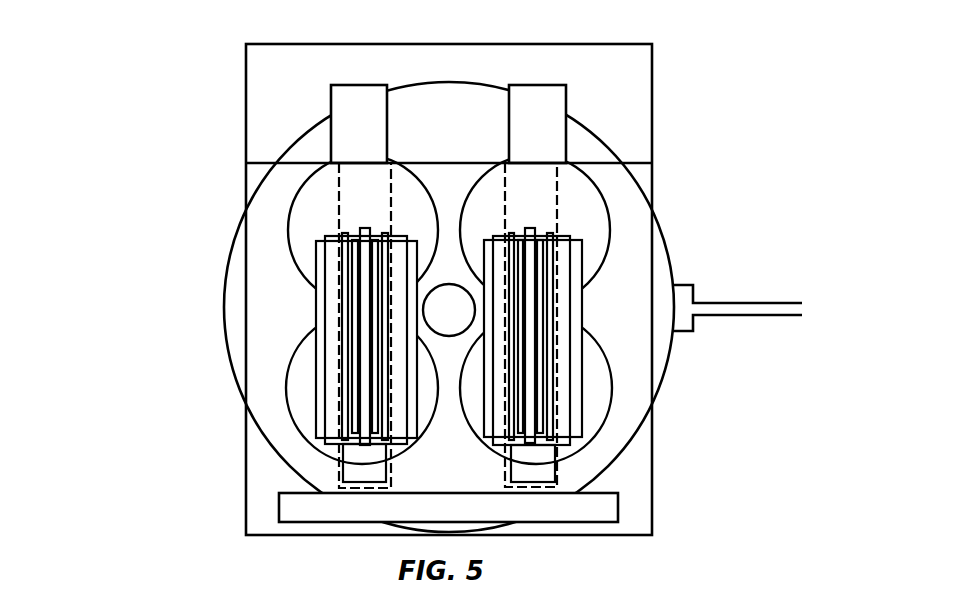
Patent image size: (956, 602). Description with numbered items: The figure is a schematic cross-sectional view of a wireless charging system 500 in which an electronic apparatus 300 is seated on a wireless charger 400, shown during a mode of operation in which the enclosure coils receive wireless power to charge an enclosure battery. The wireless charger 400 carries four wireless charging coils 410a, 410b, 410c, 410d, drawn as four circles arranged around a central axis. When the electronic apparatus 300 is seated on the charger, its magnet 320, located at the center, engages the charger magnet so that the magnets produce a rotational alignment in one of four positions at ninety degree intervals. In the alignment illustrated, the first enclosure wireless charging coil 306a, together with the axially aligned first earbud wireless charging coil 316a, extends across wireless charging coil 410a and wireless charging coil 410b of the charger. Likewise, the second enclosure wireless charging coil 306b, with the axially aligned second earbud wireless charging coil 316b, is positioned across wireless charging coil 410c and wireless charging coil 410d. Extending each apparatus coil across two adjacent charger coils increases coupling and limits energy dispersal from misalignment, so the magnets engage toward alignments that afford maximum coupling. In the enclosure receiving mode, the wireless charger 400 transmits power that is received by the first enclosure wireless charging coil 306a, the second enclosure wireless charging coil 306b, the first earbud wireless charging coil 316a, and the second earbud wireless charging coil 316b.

The wireless charging system 500 is at (444, 275).
The electronic apparatus 300 is at (652, 93).
The wireless charger 400 is at (222, 310).
The wireless charging coil 410a is at (388, 160).
The wireless charging coil 410b is at (284, 407).
The wireless charging coil 410c is at (508, 160).
The wireless charging coil 410d is at (613, 420).
The first enclosure wireless charging coil 306a is at (327, 312).
The second enclosure wireless charging coil 306b is at (583, 296).
The first earbud wireless charging coil 316a is at (346, 232).
The second earbud wireless charging coil 316b is at (545, 232).
The magnet 320 is at (447, 338).